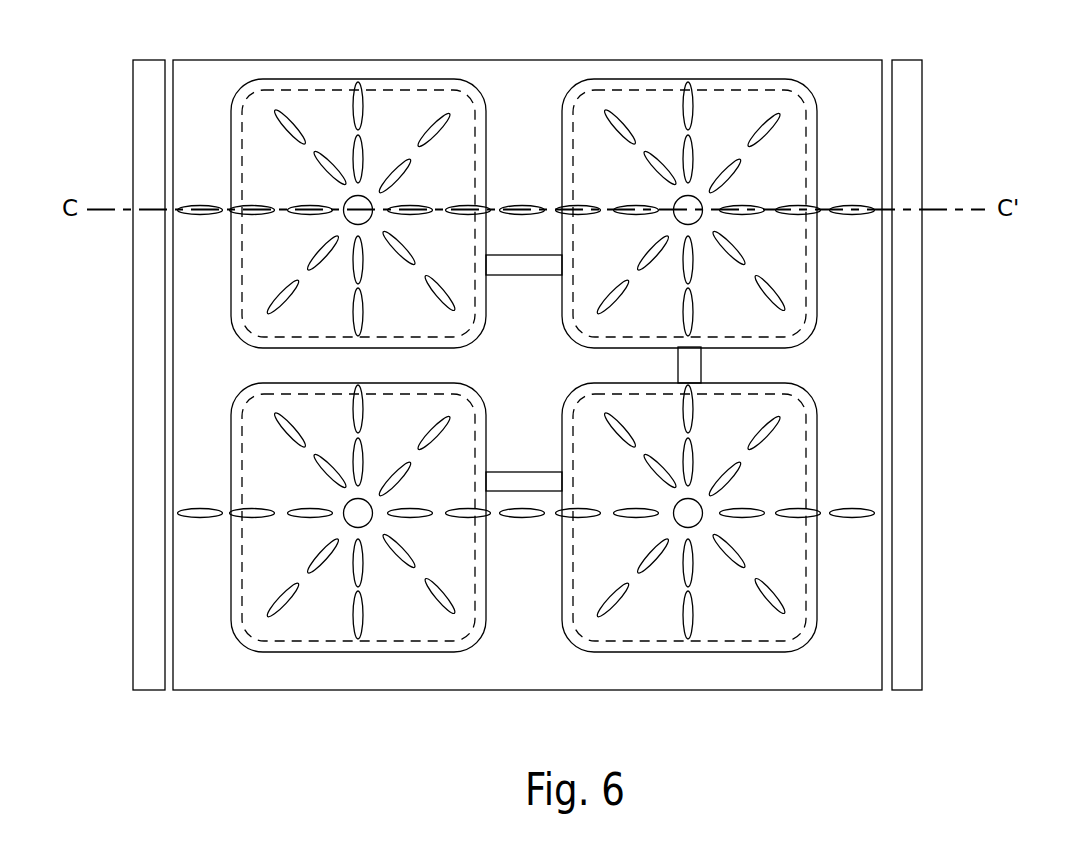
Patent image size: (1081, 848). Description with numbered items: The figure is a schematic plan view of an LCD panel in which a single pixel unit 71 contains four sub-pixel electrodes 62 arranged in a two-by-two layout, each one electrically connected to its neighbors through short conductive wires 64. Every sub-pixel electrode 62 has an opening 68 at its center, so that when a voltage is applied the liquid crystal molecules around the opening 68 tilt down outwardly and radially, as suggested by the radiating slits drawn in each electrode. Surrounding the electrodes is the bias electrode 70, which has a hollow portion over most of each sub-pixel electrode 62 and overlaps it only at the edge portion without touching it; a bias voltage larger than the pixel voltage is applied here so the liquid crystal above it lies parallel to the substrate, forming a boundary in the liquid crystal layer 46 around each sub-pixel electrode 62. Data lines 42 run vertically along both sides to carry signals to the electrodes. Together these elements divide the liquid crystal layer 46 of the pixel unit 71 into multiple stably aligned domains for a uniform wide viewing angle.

The pixel unit 71 is at (963, 108).
The bias electrode 70 is at (590, 675).
The data lines 42 is at (138, 634).
The sub-pixel electrode 62 is at (385, 625).
The conductive wires 64 is at (524, 270).
The liquid crystal layer 46 is at (686, 622).
The opening 68 is at (355, 518).